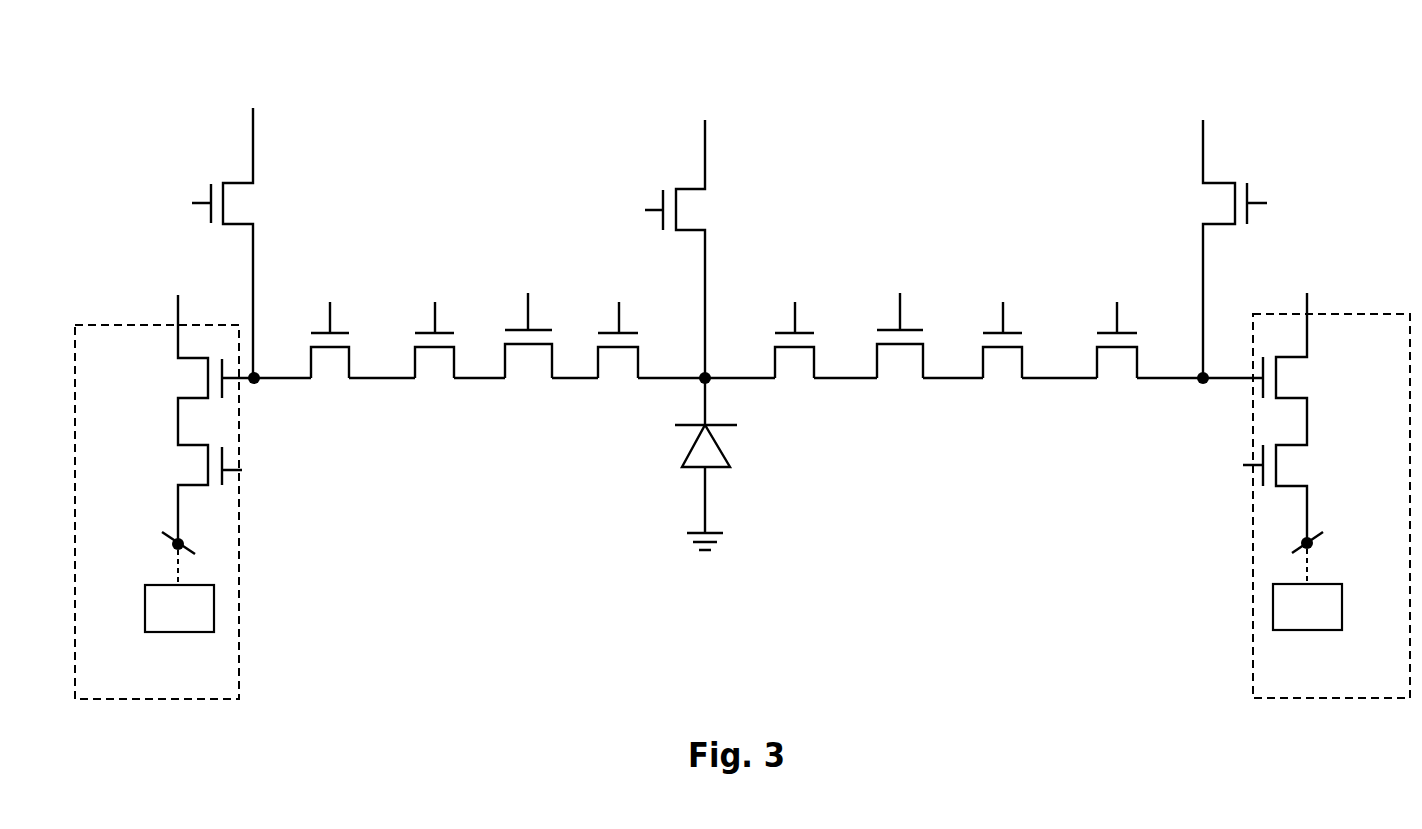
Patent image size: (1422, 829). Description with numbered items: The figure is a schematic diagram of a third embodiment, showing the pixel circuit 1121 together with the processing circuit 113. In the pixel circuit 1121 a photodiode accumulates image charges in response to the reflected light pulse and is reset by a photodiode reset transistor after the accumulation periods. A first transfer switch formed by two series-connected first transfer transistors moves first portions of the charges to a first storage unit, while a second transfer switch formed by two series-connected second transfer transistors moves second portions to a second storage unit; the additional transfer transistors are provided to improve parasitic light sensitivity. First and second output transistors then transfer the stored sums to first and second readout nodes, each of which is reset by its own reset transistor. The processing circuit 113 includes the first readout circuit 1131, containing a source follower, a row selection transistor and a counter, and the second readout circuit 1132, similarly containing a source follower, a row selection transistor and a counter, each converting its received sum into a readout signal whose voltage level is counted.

The pixel circuit 1121 is at (1278, 98).
The processing circuit 113 is at (452, 568).
The first readout circuit 1131 is at (137, 685).
The second readout circuit 1132 is at (1390, 568).